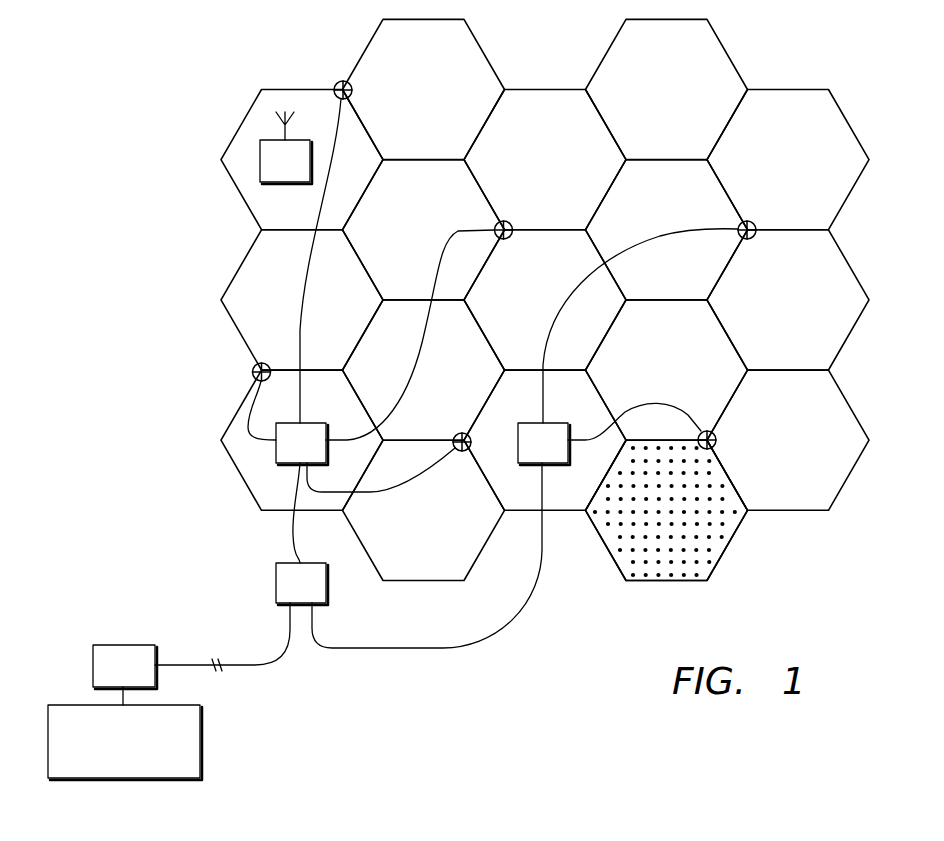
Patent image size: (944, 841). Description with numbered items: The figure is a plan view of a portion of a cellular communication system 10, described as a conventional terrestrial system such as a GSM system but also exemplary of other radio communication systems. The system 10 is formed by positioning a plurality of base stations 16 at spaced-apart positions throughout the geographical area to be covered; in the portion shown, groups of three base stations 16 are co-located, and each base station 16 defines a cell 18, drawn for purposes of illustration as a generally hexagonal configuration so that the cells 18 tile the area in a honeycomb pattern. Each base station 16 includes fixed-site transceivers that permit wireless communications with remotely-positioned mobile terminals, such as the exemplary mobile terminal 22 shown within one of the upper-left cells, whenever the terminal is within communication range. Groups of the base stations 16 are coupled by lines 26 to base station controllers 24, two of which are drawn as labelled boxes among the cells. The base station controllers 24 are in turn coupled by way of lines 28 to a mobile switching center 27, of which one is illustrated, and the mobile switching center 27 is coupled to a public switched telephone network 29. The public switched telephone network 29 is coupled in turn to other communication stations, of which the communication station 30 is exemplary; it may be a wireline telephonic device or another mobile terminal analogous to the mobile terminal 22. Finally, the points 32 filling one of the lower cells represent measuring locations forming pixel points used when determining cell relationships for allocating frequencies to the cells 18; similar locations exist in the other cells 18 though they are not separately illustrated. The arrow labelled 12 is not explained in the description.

The cellular communication system 10 is at (533, 698).
The mobile station 12 is at (278, 78).
The base station 16 is at (337, 84).
The cell 18 is at (434, 101).
The mobile terminal 22 is at (282, 183).
The base station controller 24 is at (290, 463).
The line 26 is at (420, 338).
The mobile switching center 27 is at (326, 592).
The line 28 is at (292, 546).
The public switched telephone network 29 is at (104, 644).
The communication station 30 is at (72, 705).
The points 32 is at (622, 576).